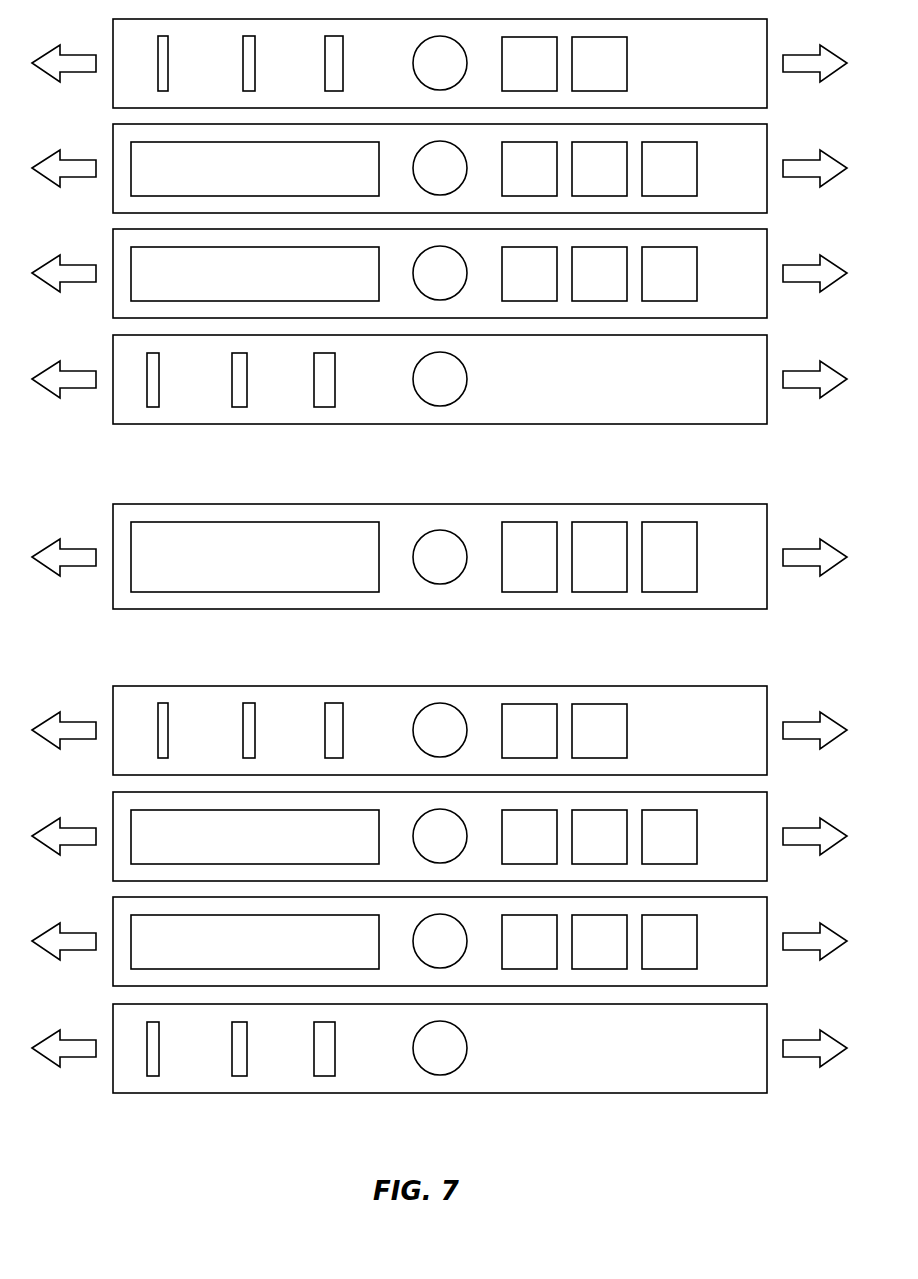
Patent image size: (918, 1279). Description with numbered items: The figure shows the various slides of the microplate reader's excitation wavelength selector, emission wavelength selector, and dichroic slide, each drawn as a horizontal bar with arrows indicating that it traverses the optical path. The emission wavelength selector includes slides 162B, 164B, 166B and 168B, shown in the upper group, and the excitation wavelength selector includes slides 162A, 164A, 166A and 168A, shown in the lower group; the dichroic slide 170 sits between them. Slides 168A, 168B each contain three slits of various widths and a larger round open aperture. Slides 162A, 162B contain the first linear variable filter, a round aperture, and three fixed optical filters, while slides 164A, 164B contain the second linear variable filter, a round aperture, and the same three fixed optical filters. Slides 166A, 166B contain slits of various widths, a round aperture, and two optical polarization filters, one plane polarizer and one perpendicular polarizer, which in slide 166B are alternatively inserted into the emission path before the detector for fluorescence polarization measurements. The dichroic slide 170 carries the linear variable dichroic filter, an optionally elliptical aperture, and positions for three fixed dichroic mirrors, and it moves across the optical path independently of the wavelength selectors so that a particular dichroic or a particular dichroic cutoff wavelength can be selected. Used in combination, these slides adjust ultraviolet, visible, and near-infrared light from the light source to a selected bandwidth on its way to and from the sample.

The slide 166B is at (440, 63).
The slide 164B is at (440, 168).
The slide 162B is at (440, 273).
The slide 168B is at (440, 379).
The dichroic slide 170 is at (440, 556).
The slide 166A is at (440, 730).
The slide 164A is at (440, 836).
The slide 162A is at (440, 941).
The slide 168A is at (440, 1048).